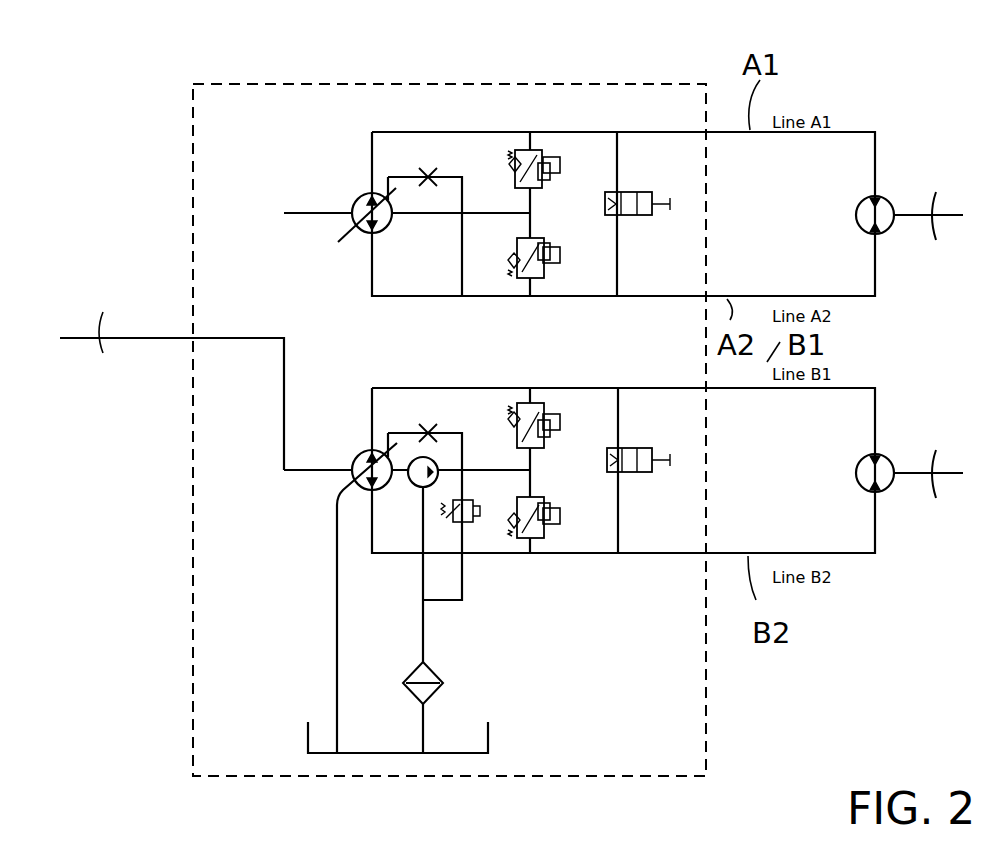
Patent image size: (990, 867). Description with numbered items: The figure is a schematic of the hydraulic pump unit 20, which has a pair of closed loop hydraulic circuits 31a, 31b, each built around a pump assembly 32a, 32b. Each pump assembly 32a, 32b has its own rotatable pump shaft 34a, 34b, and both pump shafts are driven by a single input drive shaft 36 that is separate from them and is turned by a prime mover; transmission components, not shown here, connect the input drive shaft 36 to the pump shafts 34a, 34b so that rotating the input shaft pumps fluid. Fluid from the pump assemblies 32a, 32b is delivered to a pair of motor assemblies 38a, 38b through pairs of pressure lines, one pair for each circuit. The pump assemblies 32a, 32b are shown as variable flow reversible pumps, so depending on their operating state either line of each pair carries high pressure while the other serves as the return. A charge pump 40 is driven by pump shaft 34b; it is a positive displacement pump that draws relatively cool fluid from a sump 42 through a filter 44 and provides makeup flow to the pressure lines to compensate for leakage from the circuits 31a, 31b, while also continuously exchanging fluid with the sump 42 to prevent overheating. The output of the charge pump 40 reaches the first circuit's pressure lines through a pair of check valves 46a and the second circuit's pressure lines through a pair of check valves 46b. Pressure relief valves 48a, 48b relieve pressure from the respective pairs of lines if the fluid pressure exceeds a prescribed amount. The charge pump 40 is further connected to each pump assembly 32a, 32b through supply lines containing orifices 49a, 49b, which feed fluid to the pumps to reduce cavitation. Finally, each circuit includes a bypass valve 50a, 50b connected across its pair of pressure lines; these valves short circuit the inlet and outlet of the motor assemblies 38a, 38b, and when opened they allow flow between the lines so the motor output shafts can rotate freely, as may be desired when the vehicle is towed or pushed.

The hydraulic pump unit 20 is at (311, 76).
The closed loop hydraulic circuit 31a is at (577, 117).
The closed loop hydraulic circuit 31b is at (500, 383).
The pump assembly 32a is at (360, 200).
The pump assembly 32b is at (360, 462).
The pump shaft 34a is at (303, 212).
The pump shaft 34b is at (313, 471).
The input drive shaft 36 is at (148, 337).
The motor assembly 38a is at (885, 205).
The motor assembly 38b is at (882, 467).
The charge pump 40 is at (421, 458).
The sump 42 is at (492, 735).
The filter 44 is at (416, 672).
The check valves 46a is at (518, 240).
The check valves 46b is at (540, 497).
The pressure relief valves 48a is at (562, 160).
The pressure relief valves 48b is at (553, 437).
The orifice 49a is at (428, 170).
The orifice 49b is at (427, 426).
The bypass valve 50a is at (633, 191).
The bypass valve 50b is at (657, 474).